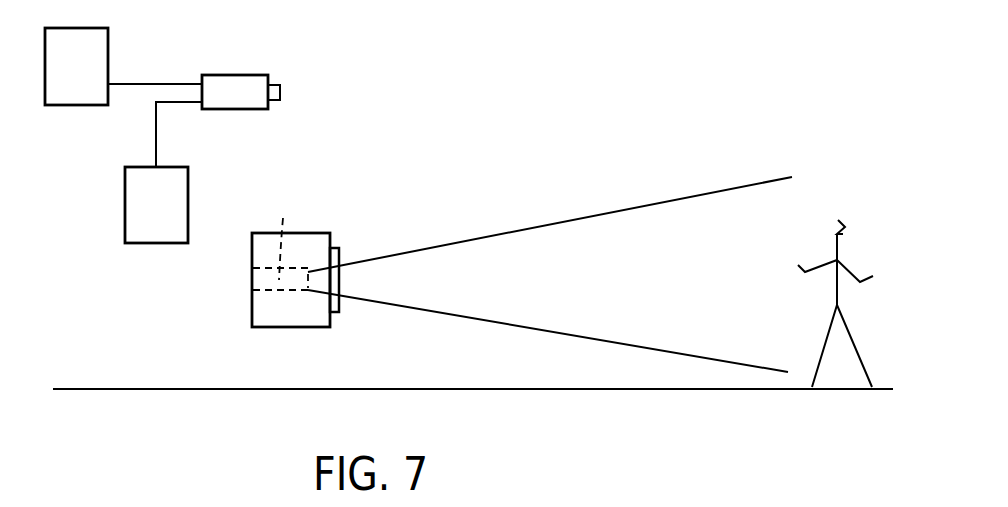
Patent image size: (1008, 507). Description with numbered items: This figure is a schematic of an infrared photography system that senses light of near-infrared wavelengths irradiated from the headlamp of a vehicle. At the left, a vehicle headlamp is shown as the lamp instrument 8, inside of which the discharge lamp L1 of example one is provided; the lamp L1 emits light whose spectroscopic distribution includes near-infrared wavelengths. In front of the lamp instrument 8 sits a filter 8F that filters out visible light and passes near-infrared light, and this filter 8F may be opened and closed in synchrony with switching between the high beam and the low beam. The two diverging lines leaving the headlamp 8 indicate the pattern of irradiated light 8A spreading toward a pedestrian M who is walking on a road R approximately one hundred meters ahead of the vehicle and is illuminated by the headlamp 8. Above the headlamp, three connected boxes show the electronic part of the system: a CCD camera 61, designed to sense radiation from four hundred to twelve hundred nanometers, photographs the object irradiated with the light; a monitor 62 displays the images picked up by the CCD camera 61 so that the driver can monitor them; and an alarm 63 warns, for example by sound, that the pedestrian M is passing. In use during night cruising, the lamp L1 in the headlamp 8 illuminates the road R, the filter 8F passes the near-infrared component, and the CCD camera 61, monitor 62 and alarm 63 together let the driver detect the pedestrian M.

The lamp instrument 8 is at (327, 232).
The field of view of camera 8A is at (553, 223).
The filter 8F is at (338, 313).
The CCD camera 61 is at (223, 109).
The monitor 62 is at (73, 105).
The alarm 63 is at (145, 243).
The lamp L1 is at (283, 232).
The pedestrian M is at (857, 252).
The road R is at (673, 389).